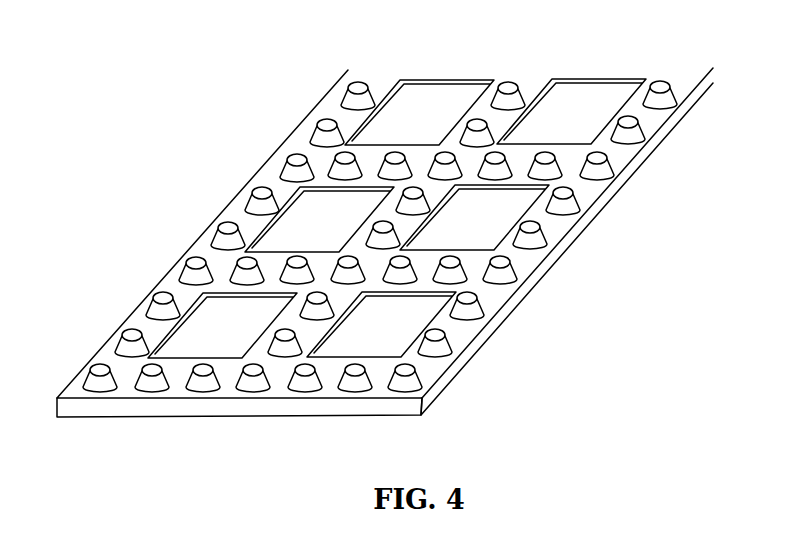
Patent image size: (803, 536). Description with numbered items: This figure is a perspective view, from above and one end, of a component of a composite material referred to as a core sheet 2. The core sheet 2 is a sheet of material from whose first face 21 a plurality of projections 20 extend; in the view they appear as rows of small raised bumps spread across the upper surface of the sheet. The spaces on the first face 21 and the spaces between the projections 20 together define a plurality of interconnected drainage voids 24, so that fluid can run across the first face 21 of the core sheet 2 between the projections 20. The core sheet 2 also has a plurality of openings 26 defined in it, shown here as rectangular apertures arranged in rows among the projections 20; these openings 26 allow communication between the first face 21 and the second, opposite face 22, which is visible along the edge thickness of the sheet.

The core sheet 2 is at (383, 224).
The projections 20 is at (352, 95).
The first face 21 is at (660, 118).
The second face 22 is at (460, 372).
The drainage voids 24 is at (300, 145).
The openings 26 is at (188, 340).